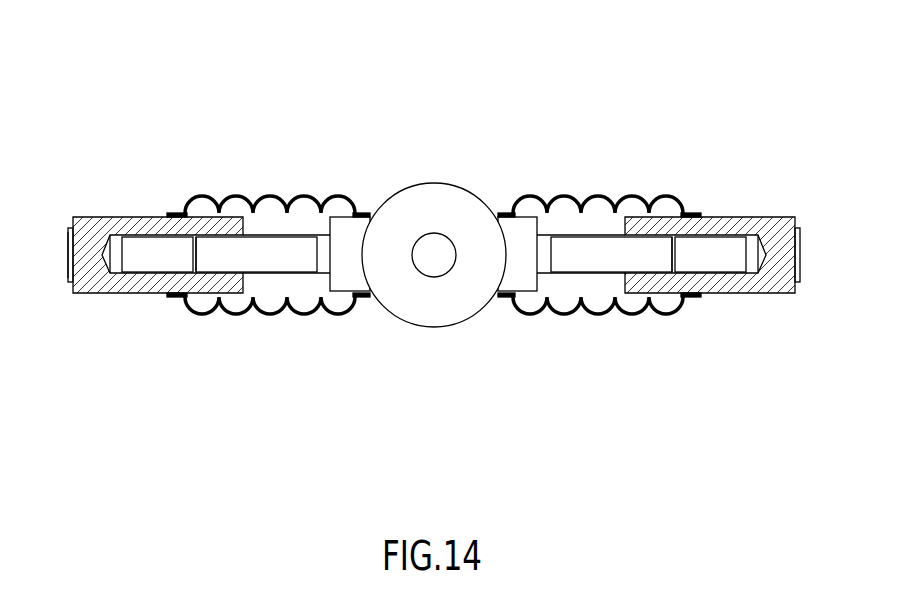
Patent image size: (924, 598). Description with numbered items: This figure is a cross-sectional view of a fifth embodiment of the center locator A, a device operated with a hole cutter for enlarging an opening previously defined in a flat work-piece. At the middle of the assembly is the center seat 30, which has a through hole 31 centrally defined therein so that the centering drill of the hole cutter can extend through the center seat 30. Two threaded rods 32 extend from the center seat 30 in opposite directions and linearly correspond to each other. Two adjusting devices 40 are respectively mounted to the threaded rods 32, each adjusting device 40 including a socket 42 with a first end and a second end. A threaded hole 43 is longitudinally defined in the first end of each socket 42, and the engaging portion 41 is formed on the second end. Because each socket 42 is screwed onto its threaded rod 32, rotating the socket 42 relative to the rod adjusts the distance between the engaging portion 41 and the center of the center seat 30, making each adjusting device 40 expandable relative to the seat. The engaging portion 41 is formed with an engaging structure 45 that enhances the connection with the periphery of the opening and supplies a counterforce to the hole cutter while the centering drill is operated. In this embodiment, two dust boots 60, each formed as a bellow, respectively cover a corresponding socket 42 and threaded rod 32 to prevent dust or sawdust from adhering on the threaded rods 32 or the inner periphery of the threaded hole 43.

The center locator A is at (181, 113).
The center seat 30 is at (475, 277).
The through hole 31 is at (450, 255).
The threaded rod 32 is at (270, 237).
The adjusting device 40 is at (144, 198).
The engaging portion 41 is at (68, 232).
The socket 42 is at (198, 297).
The threaded hole 43 is at (157, 264).
The engaging structure 45 is at (66, 255).
The dust boot 60 is at (348, 193).